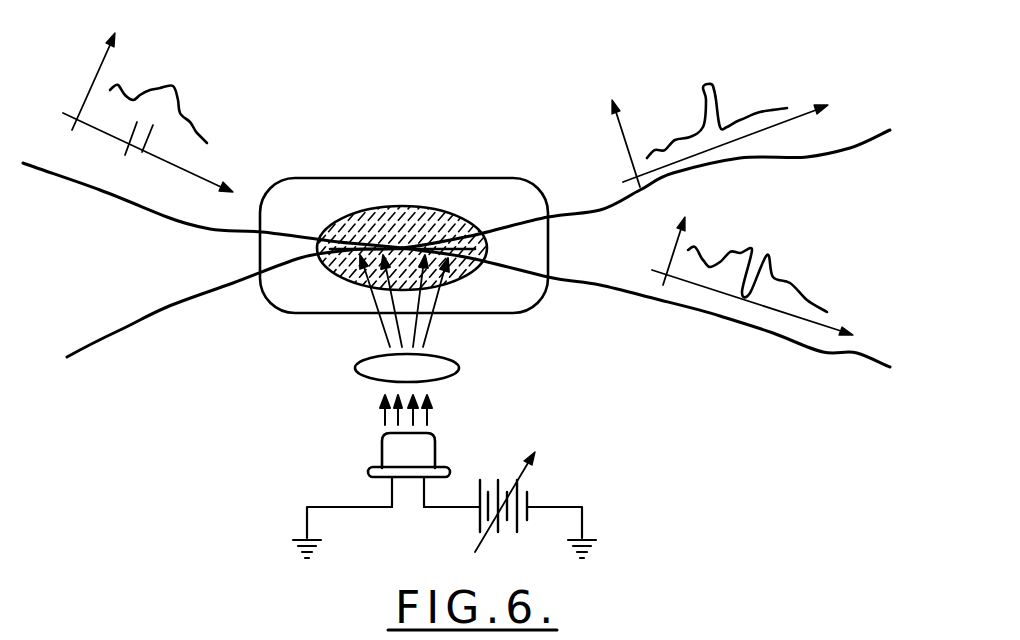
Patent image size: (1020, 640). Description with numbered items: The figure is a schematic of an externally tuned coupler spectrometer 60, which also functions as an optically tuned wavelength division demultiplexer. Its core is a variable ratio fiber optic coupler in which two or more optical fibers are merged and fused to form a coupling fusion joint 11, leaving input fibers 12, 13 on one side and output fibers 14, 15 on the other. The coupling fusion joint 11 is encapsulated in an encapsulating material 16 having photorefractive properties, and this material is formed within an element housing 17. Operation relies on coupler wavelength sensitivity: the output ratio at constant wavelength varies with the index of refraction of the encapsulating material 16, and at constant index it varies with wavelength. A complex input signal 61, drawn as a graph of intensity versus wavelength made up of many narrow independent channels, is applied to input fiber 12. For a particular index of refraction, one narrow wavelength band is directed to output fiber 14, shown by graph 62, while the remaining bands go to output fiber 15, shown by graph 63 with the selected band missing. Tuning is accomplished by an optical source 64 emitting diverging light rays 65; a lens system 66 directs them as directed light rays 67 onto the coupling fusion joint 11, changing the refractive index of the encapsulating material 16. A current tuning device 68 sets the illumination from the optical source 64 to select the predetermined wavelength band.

The coupling fusion joint 11 is at (365, 246).
The input fiber 12 is at (97, 193).
The input fiber 13 is at (170, 303).
The output fiber 14 is at (817, 158).
The output fiber 15 is at (620, 296).
The encapsulating material 16 is at (442, 208).
The element housing 17 is at (513, 177).
The externally tuned coupler spectrometer 60 is at (336, 150).
The complex input signal 61 is at (197, 99).
The graph of selected wavelength band output 62 is at (713, 82).
The graph of output intensity vs. wavelength 63 is at (793, 280).
The optical source 64 is at (380, 455).
The light rays 65 is at (450, 405).
The lens system 66 is at (355, 372).
The directed light rays 67 is at (450, 332).
The current tuning device 68 is at (530, 493).